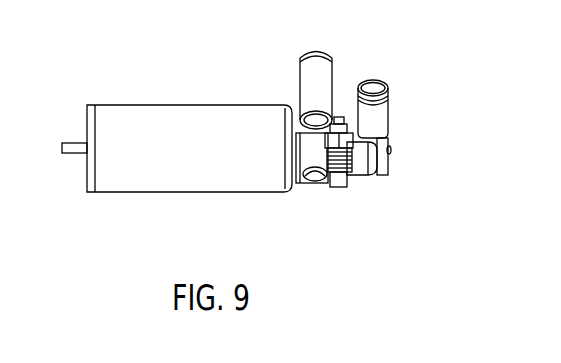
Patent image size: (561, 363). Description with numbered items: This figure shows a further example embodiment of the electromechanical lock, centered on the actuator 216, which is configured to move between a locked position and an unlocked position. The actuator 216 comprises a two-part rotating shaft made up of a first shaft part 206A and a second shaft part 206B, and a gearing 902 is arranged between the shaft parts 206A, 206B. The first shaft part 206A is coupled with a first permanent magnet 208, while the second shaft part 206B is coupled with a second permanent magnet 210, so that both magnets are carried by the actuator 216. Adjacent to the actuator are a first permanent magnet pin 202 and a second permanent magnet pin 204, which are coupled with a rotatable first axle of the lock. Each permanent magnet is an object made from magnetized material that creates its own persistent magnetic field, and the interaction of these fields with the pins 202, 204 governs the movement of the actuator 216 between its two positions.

The actuator 216 is at (206, 165).
The first permanent magnet pin 202 is at (300, 83).
The second permanent magnet pin 204 is at (388, 115).
The gearing 902 is at (340, 117).
The first shaft part 206A is at (308, 158).
The second shaft part 206B is at (360, 162).
The first permanent magnet 208 is at (312, 170).
The second permanent magnet 210 is at (390, 150).